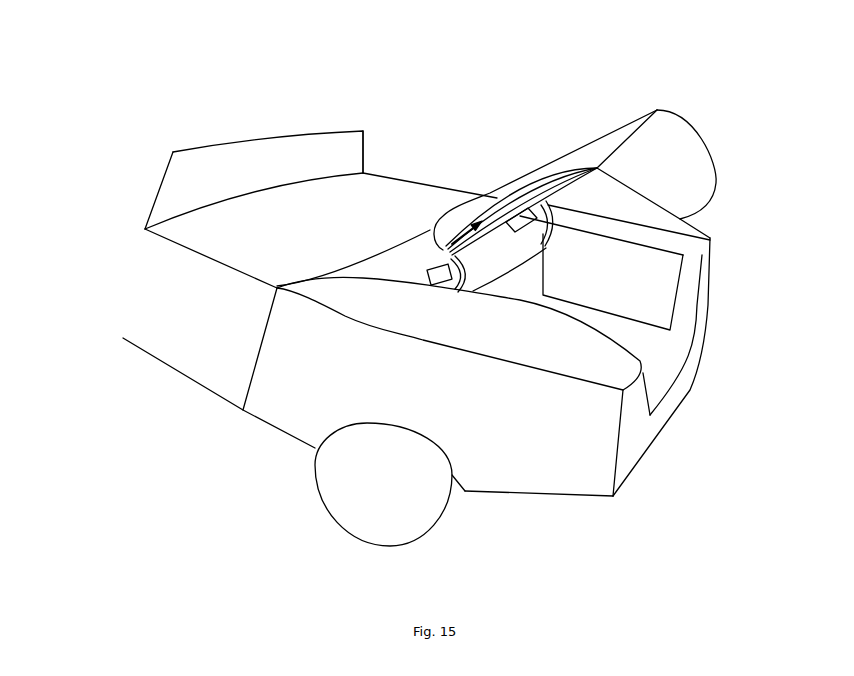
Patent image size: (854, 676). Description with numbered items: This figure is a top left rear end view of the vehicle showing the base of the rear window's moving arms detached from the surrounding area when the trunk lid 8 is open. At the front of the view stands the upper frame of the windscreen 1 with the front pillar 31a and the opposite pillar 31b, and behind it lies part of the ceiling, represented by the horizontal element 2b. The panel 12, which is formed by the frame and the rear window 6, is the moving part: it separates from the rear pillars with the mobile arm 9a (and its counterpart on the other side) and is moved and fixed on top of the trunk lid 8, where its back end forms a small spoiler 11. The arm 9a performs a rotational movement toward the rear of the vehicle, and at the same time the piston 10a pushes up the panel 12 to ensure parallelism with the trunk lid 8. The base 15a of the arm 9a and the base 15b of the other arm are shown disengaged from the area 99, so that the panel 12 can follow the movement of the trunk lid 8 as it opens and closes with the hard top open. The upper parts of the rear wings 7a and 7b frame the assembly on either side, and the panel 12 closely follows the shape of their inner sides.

The upper frame of the windscreen 1 is at (196, 147).
The front pillar 31a is at (157, 192).
The hood side edge 31b is at (363, 165).
The rear window 6 is at (568, 162).
The panel 12 is at (650, 106).
The small spoiler 11 is at (645, 126).
The trunk lid 8 is at (663, 168).
The base of the arm 9b 15b is at (537, 220).
The rear wing 7b is at (683, 230).
The piston 10a is at (495, 230).
The area 99 is at (500, 265).
The horizontal element 2b is at (615, 304).
The rear wing 7a is at (443, 327).
The mobile arm 9a is at (443, 256).
The base of the arm 9a 15a is at (418, 277).